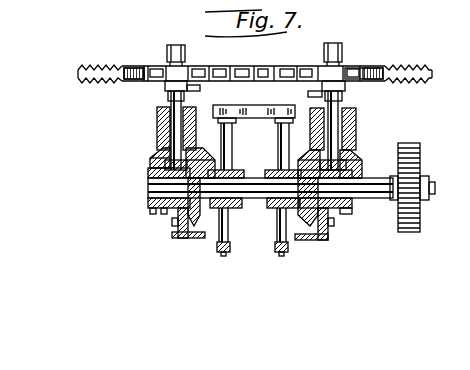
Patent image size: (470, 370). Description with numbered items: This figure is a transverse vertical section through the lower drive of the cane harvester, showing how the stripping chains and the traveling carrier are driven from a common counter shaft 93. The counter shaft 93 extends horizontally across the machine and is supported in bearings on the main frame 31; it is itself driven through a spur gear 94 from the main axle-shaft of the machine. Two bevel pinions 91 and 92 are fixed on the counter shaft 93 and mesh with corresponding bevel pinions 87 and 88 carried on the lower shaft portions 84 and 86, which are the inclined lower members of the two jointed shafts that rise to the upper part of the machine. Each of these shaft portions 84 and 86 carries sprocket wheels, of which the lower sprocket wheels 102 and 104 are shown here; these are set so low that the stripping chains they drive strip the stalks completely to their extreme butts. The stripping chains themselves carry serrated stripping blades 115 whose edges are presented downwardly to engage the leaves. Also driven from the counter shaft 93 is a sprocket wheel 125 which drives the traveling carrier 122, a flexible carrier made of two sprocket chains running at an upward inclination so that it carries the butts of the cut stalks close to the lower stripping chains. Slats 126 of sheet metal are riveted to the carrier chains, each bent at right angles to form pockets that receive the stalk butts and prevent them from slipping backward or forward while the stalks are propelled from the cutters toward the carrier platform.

The main frame 31 is at (200, 88).
The lower shaft portion 84 is at (342, 52).
The lower shaft portion 86 is at (168, 50).
The bevel pinion 87 is at (348, 162).
The bevel pinion 88 is at (148, 152).
The bevel pinion 91 is at (303, 162).
The bevel pinion 92 is at (204, 160).
The counter shaft 93 is at (252, 199).
The spur gear 94 is at (420, 162).
The sprocket wheel 102 is at (362, 82).
The sprocket wheel 104 is at (146, 81).
The stripping blade 115 is at (78, 72).
The traveling carrier 122 is at (277, 121).
The sprocket wheel 125 is at (277, 245).
The slat 126 is at (268, 111).